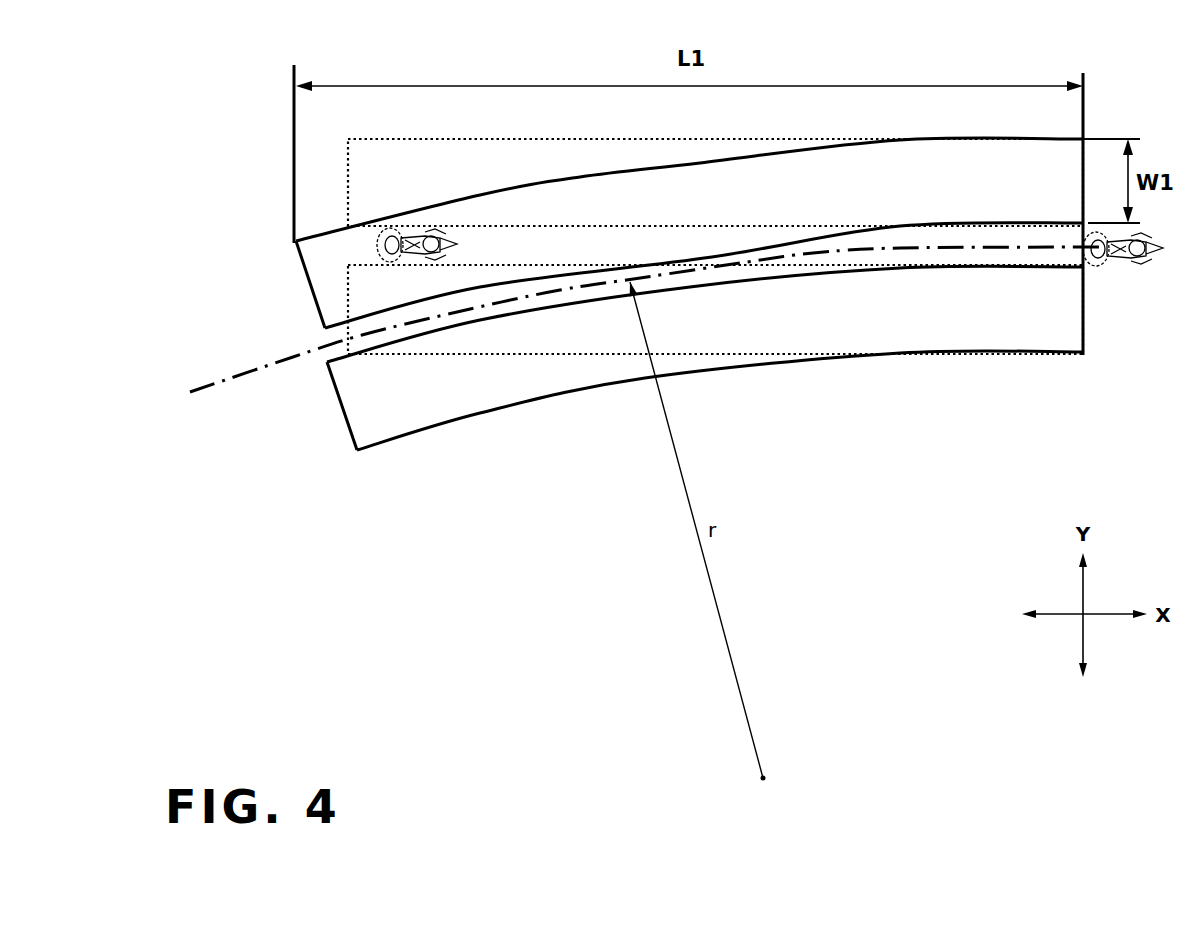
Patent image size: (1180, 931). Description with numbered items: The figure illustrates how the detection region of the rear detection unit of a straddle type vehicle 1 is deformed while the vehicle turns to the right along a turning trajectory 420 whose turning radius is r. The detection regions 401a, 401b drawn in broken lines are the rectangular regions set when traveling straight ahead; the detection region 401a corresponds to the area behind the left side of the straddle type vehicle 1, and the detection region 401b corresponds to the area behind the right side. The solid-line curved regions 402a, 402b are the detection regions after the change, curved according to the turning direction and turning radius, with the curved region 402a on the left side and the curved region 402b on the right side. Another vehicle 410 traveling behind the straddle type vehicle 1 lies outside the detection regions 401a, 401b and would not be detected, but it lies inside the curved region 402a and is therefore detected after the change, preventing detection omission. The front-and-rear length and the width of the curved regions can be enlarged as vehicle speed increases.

The straddle type vehicle 1 is at (1140, 267).
The another vehicle 410 is at (380, 228).
The detection region before change (left) 401a is at (427, 158).
The detection region before change (right) 401b is at (530, 337).
The curved region after change (left) 402a is at (322, 280).
The curved region after change (right) 402b is at (378, 422).
The turning trajectory 420 is at (247, 382).